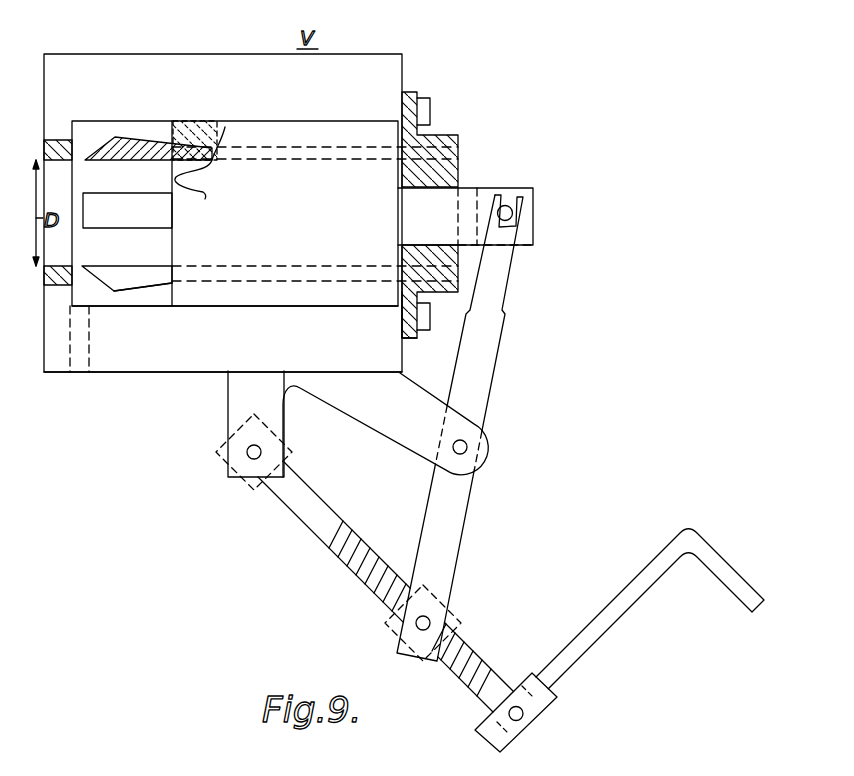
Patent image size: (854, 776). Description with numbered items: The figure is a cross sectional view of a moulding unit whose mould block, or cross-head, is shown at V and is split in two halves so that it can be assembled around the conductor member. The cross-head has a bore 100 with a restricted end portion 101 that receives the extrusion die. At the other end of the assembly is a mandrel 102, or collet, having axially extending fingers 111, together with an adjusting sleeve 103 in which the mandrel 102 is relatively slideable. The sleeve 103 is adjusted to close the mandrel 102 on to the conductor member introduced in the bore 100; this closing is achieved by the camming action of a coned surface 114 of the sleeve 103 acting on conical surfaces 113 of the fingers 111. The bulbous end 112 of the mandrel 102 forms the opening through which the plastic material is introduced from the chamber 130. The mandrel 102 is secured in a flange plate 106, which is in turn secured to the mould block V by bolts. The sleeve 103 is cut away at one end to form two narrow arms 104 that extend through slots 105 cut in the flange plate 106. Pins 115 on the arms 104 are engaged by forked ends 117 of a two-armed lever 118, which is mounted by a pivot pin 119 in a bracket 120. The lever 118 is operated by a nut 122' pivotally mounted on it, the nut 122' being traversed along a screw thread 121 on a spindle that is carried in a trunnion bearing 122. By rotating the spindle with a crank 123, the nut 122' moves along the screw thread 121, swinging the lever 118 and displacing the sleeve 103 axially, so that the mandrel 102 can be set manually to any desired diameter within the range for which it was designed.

The bore 100 is at (303, 104).
The restricted end portion 101 is at (55, 140).
The mandrel 102 is at (157, 150).
The adjusting sleeve 103 is at (302, 297).
The narrow arms 104 is at (472, 189).
The slots 105 is at (410, 244).
The flange plate 106 is at (403, 338).
The fingers 111 is at (160, 210).
The bulbous end 112 is at (113, 288).
The conical surfaces 113 is at (150, 286).
The coned surface 114 is at (192, 126).
The pins 115 is at (507, 205).
The forked ends 117 is at (510, 237).
The lever 118 is at (457, 493).
The pivot pin 119 is at (467, 444).
The bracket 120 is at (383, 420).
The screw thread 121 is at (335, 553).
The trunnion bearing 122 is at (254, 470).
The nut 122' is at (457, 617).
The crank 123 is at (618, 599).
The chamber 130 is at (121, 333).